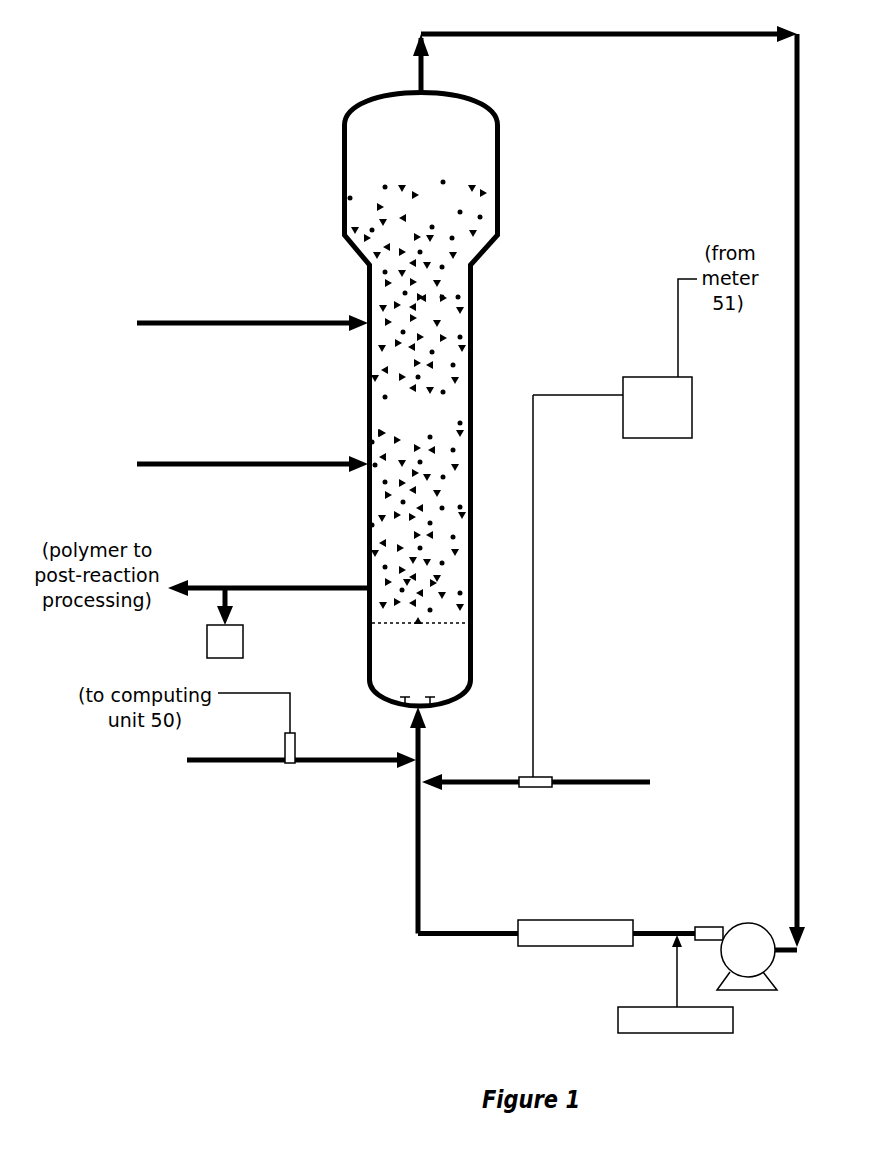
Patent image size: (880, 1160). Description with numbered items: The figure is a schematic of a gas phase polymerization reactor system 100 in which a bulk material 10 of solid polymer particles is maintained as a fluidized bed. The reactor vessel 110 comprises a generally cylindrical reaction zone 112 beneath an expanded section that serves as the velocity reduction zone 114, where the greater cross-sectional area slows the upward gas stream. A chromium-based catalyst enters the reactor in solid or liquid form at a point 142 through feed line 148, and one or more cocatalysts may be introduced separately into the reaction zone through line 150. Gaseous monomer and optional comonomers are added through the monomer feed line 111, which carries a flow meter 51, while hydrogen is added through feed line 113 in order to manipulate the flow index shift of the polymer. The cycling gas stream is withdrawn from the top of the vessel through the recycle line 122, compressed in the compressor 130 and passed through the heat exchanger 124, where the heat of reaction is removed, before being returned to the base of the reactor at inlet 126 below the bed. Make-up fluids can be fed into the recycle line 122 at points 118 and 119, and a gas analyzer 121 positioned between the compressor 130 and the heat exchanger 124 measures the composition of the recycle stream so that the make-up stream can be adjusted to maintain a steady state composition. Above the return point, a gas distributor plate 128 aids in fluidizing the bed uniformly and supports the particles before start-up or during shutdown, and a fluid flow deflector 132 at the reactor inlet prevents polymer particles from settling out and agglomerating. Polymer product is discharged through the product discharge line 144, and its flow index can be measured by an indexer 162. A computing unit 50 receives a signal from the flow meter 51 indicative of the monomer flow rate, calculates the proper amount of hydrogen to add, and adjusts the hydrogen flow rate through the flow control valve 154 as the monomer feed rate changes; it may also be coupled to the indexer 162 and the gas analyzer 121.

The gas phase polymerization reactor system 100 is at (205, 98).
The reactor vessel 110 is at (367, 506).
The velocity reduction zone 114 is at (406, 149).
The reaction zone 112 is at (405, 426).
The bulk material 10 is at (377, 433).
The feed line 148 is at (207, 327).
The catalyst entry point 142 is at (363, 330).
The cocatalyst line 150 is at (207, 467).
The product discharge line 144 is at (300, 586).
The indexer 162 is at (207, 642).
The gas distributor plate 128 is at (366, 622).
The fluid flow deflector 132 is at (398, 699).
The inlet 126 is at (415, 710).
The recycle line 122 is at (414, 875).
The make-up fluid feed point 118 is at (422, 792).
The make-up fluid feed point 119 is at (415, 770).
The monomer feed line 111 is at (205, 763).
The flow meter 51 is at (283, 735).
The hydrogen feed line 113 is at (590, 786).
The flow control valve 154 is at (538, 777).
The computing unit 50 is at (693, 408).
The heat exchanger 124 is at (575, 918).
The compressor 130 is at (757, 922).
The gas analyzer 121 is at (688, 1034).